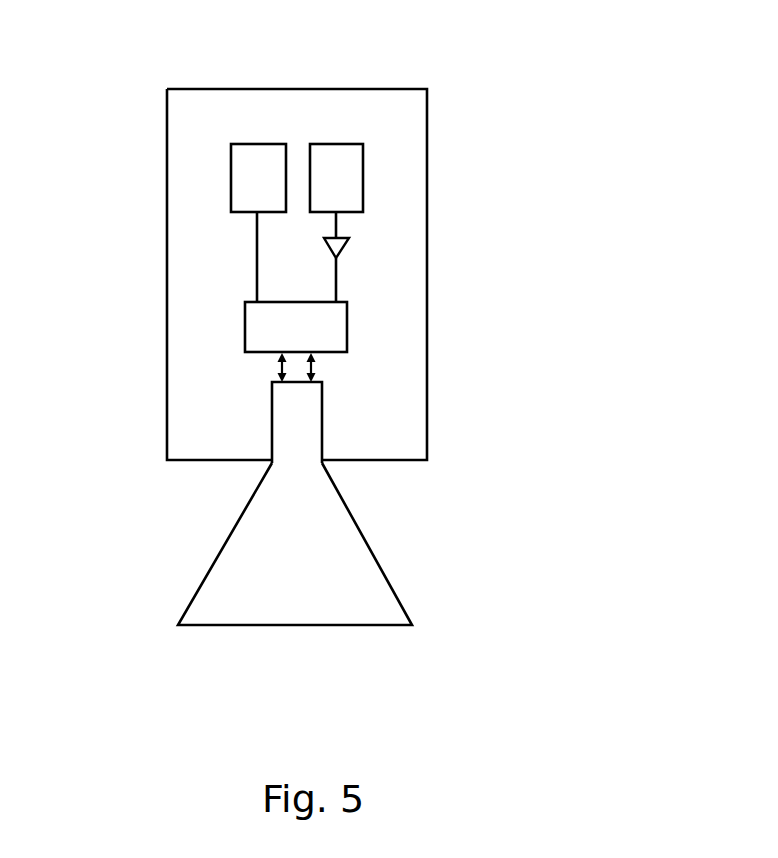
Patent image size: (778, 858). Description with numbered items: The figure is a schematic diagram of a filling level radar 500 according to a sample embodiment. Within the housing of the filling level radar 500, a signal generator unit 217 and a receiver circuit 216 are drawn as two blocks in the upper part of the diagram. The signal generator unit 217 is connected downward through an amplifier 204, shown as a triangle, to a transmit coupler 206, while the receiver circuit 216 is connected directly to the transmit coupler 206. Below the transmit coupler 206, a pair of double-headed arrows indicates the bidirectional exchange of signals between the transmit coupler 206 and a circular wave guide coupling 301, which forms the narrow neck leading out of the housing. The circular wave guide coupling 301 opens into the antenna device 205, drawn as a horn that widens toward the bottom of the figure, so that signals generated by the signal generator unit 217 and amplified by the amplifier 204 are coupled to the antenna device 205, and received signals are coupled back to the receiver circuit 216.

The filling level radar 500 is at (560, 312).
The receiver circuit 216 is at (257, 144).
The signal generator unit 217 is at (338, 144).
The amplifier 204 is at (349, 250).
The transmit coupler 206 is at (245, 325).
The circular wave guide coupling 301 is at (322, 382).
The antenna device 205 is at (357, 522).